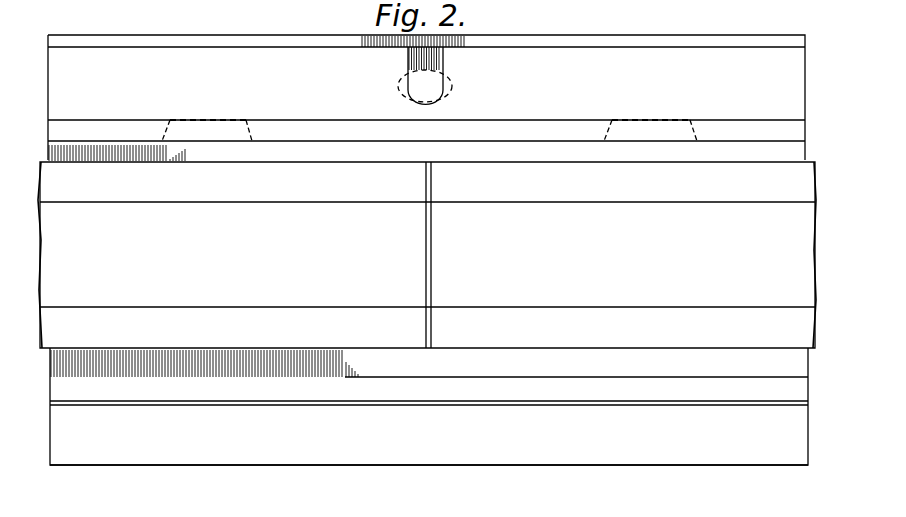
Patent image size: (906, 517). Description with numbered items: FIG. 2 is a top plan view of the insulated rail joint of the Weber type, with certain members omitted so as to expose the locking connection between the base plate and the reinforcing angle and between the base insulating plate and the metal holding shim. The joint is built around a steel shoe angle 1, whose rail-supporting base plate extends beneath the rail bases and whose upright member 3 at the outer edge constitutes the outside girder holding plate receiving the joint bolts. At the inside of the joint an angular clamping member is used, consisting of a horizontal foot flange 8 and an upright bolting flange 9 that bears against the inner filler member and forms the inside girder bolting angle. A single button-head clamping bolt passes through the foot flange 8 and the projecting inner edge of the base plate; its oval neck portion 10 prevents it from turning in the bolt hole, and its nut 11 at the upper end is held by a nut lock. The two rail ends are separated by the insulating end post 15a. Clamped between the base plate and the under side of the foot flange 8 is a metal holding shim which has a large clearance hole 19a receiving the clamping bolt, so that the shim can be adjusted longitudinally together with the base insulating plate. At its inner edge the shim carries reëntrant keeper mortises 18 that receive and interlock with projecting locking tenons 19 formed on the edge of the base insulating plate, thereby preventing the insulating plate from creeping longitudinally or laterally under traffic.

The shoe angle 1 is at (587, 454).
The upright member 3 is at (514, 392).
The horizontal foot flange 8 is at (600, 47).
The upright bolting flange 9 is at (545, 120).
The oval neck portion 10 is at (152, 15).
The nut 11 is at (62, 9).
The insulating end post 15a is at (432, 238).
The keeper mortise 18 is at (245, 120).
The locking tenon 19 is at (212, 120).
The clearance hole 19a is at (428, 78).